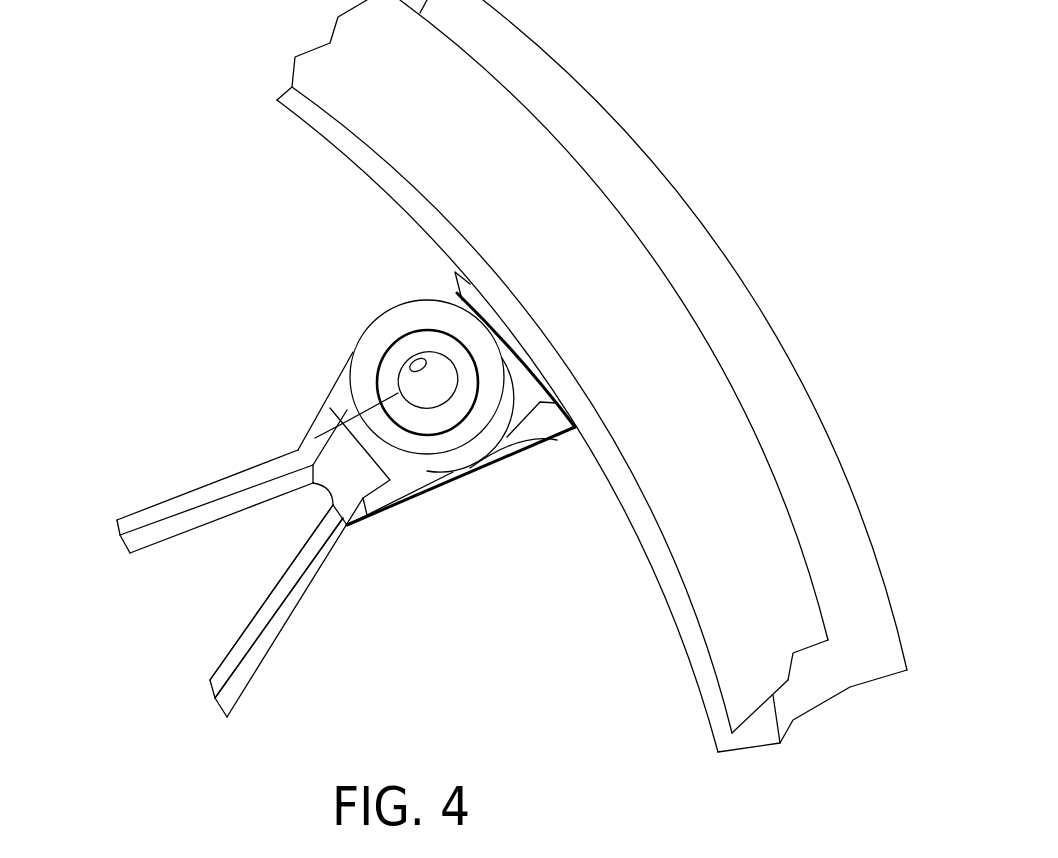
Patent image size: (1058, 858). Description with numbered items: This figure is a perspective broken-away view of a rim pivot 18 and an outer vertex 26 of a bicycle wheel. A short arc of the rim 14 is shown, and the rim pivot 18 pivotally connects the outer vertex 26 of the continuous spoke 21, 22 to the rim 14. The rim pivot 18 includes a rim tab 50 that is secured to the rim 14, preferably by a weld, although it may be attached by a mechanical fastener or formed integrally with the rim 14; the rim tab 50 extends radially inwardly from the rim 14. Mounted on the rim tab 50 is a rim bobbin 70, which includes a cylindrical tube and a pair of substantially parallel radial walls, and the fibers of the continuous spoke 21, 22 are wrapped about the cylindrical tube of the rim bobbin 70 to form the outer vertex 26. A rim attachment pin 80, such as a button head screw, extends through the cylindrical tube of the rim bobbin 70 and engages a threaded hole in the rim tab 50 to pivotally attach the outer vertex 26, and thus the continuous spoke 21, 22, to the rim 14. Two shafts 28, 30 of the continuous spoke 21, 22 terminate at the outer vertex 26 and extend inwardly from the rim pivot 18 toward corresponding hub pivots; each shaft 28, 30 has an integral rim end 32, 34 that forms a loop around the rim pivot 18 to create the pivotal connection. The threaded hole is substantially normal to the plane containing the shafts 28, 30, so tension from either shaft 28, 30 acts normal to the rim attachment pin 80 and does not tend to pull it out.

The rim 14 is at (660, 170).
The rim pivot 18 is at (330, 299).
The right continuous spoke 21 is at (233, 645).
The left continuous spoke 22 is at (233, 645).
The outer vertex 26 is at (300, 440).
The shaft 28 is at (133, 520).
The shaft 30 is at (257, 655).
The integral rim end 32 is at (340, 402).
The integral rim end 34 is at (400, 462).
The rim tab 50 is at (557, 440).
The rim bobbin 70 is at (435, 300).
The rim attachment pin 80 is at (325, 512).